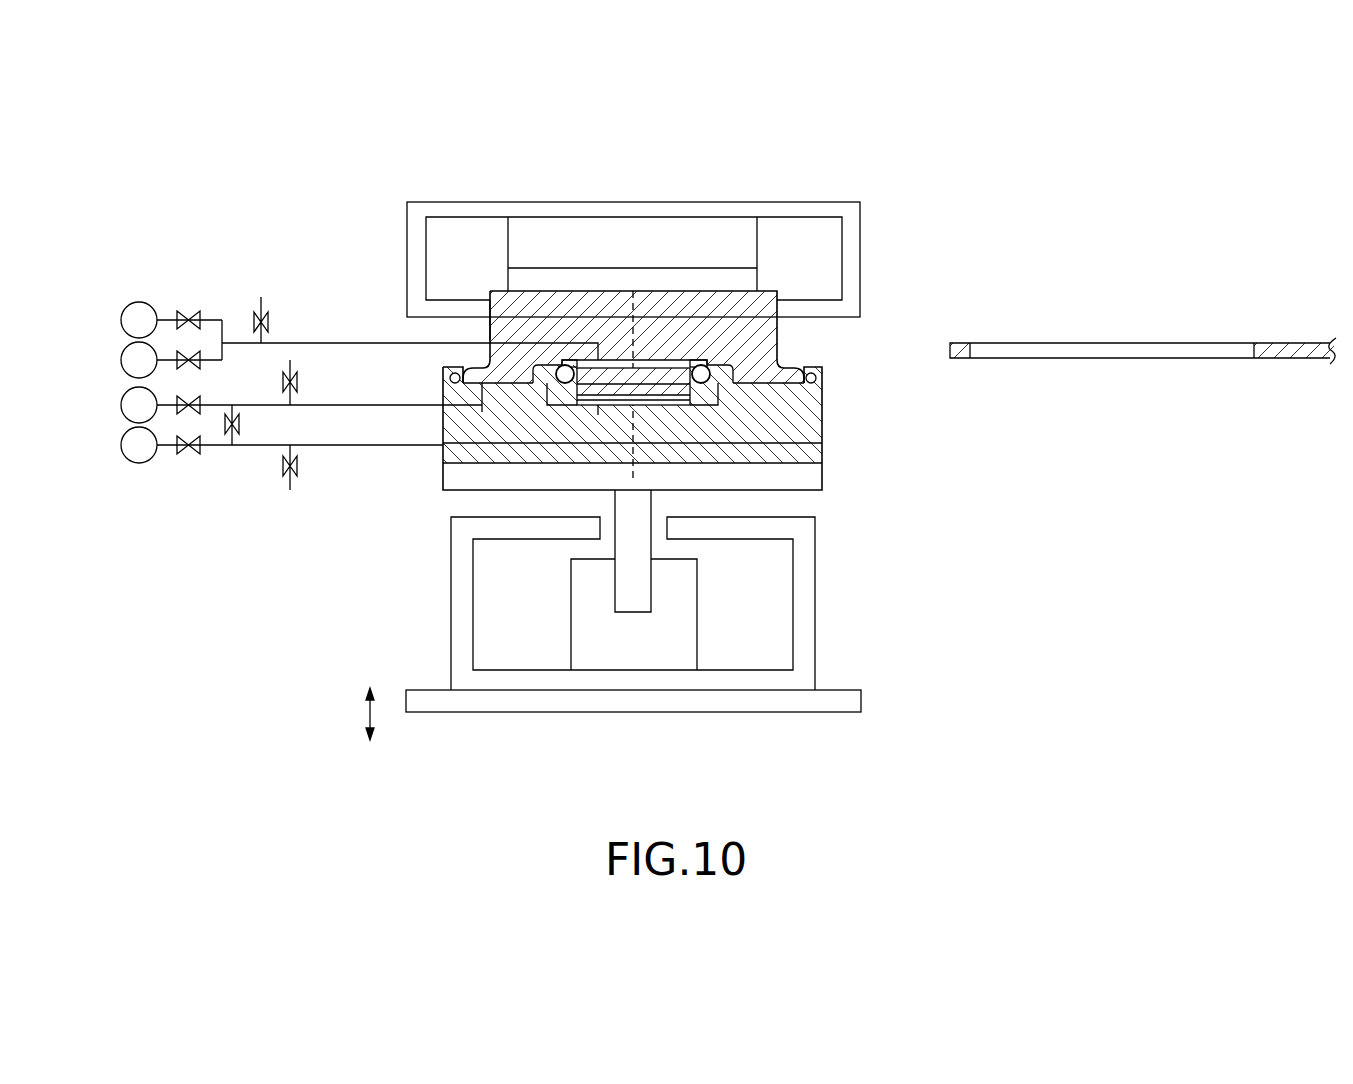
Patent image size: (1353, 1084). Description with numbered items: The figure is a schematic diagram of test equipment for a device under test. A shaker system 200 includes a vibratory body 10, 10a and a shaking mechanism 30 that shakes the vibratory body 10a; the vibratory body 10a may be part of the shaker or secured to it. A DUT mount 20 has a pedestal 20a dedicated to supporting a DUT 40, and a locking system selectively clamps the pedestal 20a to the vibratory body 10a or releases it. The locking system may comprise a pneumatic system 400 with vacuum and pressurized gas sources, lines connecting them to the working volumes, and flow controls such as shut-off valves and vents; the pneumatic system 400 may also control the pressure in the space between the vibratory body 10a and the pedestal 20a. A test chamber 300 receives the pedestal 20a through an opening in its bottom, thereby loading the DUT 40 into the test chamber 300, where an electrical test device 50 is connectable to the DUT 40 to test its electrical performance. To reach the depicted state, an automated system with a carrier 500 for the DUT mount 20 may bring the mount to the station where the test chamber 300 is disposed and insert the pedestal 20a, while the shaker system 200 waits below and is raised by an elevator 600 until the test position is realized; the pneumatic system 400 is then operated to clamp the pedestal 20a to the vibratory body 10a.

The vibratory body 10 is at (679, 486).
The vibratory body 10a is at (797, 441).
The DUT mount 20 is at (562, 318).
The pedestal 20a is at (515, 312).
The shaking mechanism 30 is at (679, 603).
The DUT 40 is at (688, 281).
The electrical test device 50 is at (580, 237).
The shaker system 200 is at (711, 526).
The test chamber 300 is at (693, 239).
The pneumatic system 400 is at (87, 297).
The carrier 500 is at (1266, 324).
The elevator 600 is at (840, 726).